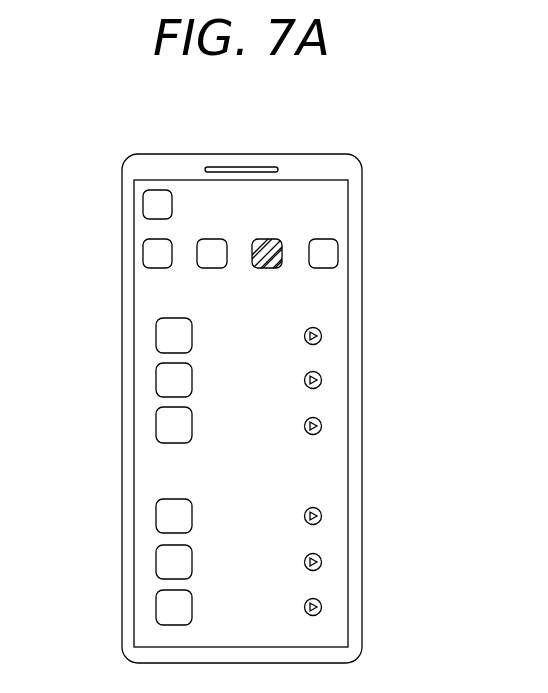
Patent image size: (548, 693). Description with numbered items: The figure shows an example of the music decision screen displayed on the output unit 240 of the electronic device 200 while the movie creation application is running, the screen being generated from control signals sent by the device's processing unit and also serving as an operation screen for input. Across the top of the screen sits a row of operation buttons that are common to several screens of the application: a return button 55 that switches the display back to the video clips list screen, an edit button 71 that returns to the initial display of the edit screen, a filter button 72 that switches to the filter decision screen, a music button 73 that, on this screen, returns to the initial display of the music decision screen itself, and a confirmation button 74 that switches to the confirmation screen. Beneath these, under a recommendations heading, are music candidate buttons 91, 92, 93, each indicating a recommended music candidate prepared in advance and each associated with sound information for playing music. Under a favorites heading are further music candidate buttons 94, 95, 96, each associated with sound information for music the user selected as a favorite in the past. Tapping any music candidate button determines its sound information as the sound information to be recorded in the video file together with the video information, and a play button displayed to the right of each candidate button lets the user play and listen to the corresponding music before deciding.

The electronic device 200 is at (313, 162).
The output unit 240 is at (340, 215).
The return button 55 is at (152, 207).
The edit button 71 is at (152, 251).
The filter button 72 is at (212, 247).
The music button 73 is at (265, 247).
The confirmation button 74 is at (320, 247).
The music candidate button 91 is at (172, 337).
The music candidate button 92 is at (173, 381).
The music candidate button 93 is at (173, 427).
The music candidate button 94 is at (175, 521).
The music candidate button 95 is at (175, 566).
The music candidate button 96 is at (175, 612).